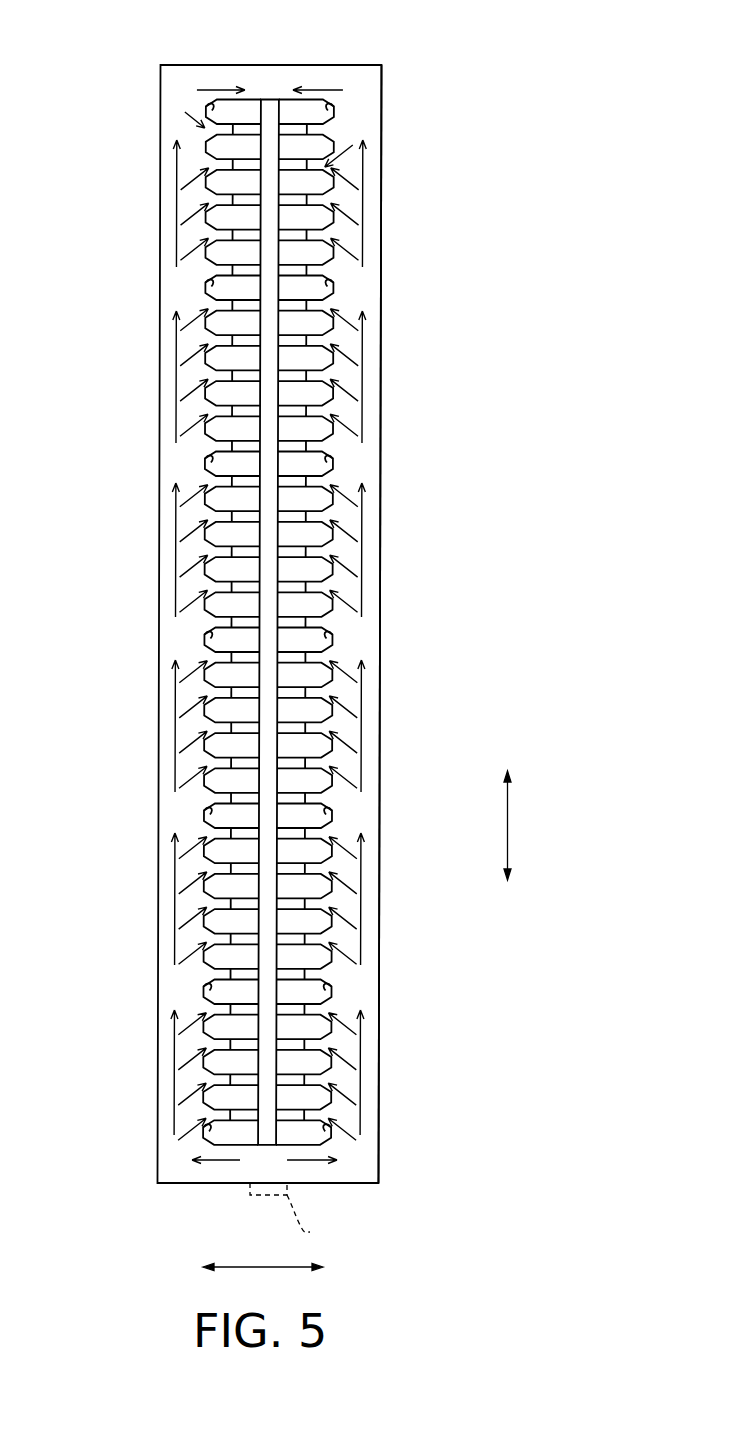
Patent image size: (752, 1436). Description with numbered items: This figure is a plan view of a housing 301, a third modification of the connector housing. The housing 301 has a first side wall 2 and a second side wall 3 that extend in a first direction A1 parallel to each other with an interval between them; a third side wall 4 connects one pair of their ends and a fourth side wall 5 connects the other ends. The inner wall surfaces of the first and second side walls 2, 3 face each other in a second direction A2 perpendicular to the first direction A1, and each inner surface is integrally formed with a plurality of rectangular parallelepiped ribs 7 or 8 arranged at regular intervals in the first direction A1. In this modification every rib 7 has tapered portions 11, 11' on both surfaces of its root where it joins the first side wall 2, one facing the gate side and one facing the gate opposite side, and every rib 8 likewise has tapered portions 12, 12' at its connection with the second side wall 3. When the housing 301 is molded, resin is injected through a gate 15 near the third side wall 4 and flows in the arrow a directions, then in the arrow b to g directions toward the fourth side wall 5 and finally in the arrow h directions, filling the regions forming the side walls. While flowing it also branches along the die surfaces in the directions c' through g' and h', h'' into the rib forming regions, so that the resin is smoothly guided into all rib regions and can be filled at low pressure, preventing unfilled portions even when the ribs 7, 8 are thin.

The first side wall 2 is at (162, 230).
The second side wall 3 is at (381, 570).
The third side wall 4 is at (243, 1173).
The fourth side wall 5 is at (270, 75).
The rib 7 is at (217, 302).
The rib 8 is at (323, 132).
The tapered portion 11 is at (182, 606).
The tapered portion 11' is at (156, 625).
The tapered portion 12 is at (356, 606).
The tapered portion 12' is at (385, 633).
The gate 15 is at (297, 1215).
The housing 301 is at (399, 393).
The first direction A1 is at (508, 817).
The second direction A2 is at (280, 1268).